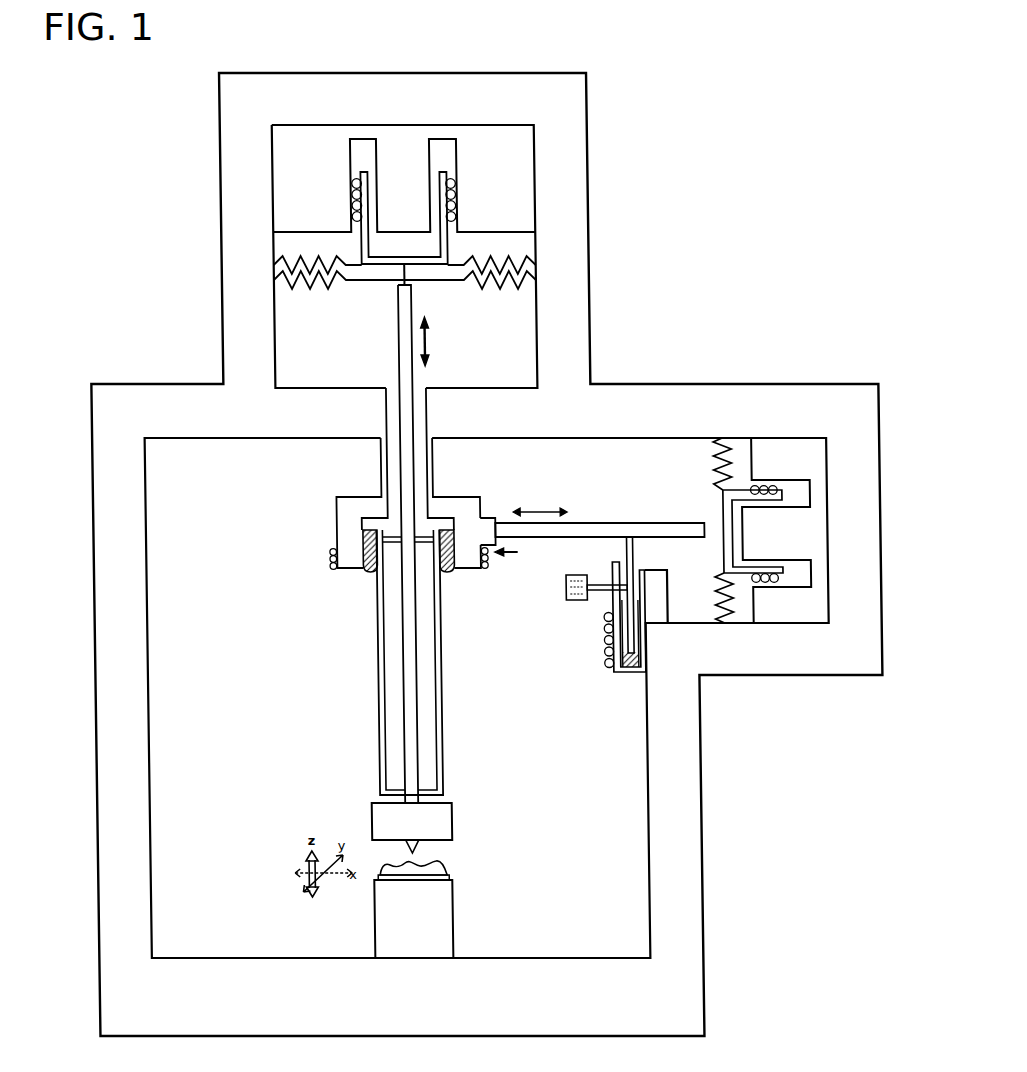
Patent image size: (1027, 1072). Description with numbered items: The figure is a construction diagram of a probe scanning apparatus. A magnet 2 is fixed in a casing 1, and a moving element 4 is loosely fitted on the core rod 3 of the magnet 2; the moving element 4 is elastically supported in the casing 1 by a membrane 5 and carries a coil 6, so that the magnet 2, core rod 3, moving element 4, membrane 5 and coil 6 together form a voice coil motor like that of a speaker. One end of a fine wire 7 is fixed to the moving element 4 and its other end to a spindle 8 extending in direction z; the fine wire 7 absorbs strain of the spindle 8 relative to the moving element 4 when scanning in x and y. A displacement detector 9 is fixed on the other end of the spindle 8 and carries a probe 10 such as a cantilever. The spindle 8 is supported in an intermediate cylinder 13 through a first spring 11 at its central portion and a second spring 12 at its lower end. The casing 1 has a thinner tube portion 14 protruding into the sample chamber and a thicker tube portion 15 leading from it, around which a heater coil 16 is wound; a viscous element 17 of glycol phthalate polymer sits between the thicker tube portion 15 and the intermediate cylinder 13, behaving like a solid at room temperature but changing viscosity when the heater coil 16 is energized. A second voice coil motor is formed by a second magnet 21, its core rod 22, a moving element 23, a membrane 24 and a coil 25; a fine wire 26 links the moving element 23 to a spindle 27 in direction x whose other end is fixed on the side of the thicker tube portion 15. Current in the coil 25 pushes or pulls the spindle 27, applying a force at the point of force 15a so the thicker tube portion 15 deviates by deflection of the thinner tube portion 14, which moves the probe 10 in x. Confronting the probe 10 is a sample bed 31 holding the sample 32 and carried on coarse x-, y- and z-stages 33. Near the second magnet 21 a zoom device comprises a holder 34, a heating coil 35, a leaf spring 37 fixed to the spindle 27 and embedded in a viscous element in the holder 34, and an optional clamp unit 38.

The casing 1 is at (565, 118).
The magnet 2 is at (512, 196).
The core rod 3 is at (399, 193).
The moving element 4 is at (347, 172).
The membrane 5 is at (511, 285).
The coil 6 is at (348, 190).
The fine wire 7 is at (397, 275).
The spindle 8 is at (400, 362).
The displacement detector 9 is at (444, 820).
The probe 10 is at (410, 848).
The first spring 11 is at (424, 545).
The second spring 12 is at (427, 785).
The intermediate cylinder 13 is at (434, 692).
The thinner tube portion 14 is at (375, 462).
The thicker tube portion 15 is at (338, 510).
The point of force 15a is at (478, 520).
The heater coil 16 is at (321, 558).
The viscous element 17 is at (359, 578).
The second magnet 21 is at (774, 450).
The core rod 22 is at (761, 532).
The moving element 23 is at (715, 512).
The membrane 24 is at (706, 452).
The coil 25 is at (757, 585).
The fine wire 26 is at (710, 540).
The spindle 27 is at (595, 523).
The sample bed 31 is at (443, 881).
The sample 32 is at (438, 866).
The coarse x-, y- and z-stages 33 is at (382, 926).
The holder 34 is at (619, 674).
The heating coil 35 is at (592, 636).
The leaf spring 37 is at (612, 546).
The clamp unit 38 is at (557, 587).